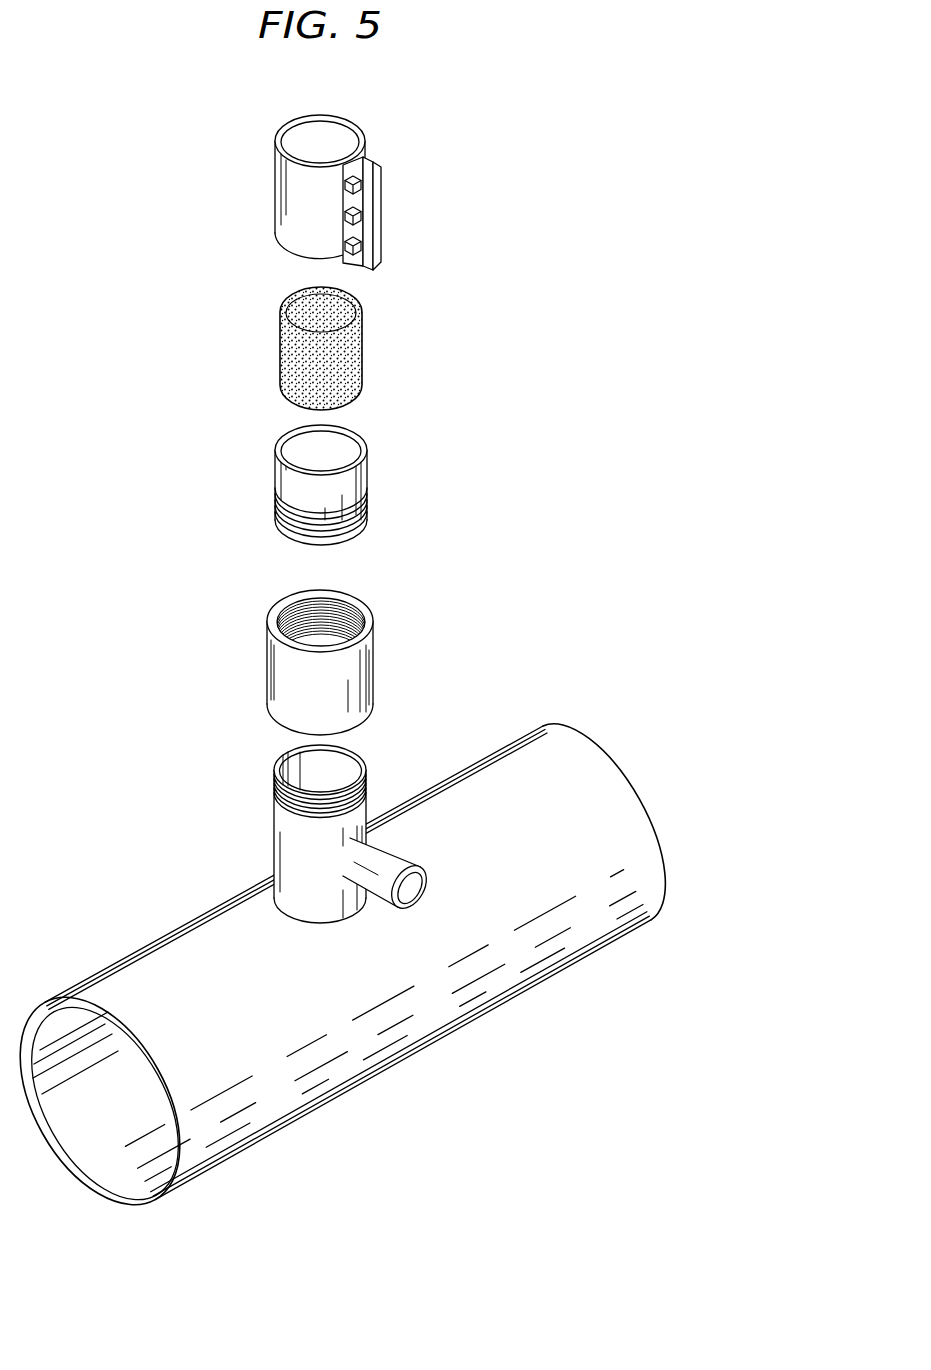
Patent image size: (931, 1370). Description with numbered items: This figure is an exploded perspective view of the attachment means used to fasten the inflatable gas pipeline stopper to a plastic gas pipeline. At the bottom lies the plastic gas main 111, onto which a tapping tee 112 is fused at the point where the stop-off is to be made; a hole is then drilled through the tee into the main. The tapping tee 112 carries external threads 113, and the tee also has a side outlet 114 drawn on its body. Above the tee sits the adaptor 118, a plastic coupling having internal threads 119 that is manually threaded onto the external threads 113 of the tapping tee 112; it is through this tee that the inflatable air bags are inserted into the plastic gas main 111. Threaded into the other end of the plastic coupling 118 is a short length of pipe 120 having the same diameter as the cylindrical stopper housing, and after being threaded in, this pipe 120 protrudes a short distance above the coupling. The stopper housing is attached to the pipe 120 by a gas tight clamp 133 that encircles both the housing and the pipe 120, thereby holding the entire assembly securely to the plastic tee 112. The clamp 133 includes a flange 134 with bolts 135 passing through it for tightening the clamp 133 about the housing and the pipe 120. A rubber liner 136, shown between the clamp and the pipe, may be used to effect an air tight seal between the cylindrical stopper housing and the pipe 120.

The plastic gas main 111 is at (553, 930).
The tapping tee 112 is at (340, 825).
The external threads 113 is at (368, 790).
The side outlet of tee 114 is at (388, 857).
The adaptor 118 is at (309, 650).
The internal threads 119 is at (343, 612).
The pipe 120 is at (284, 486).
The clamp 133 is at (323, 204).
The flange 134 is at (378, 160).
The bolts 135 is at (344, 250).
The rubber liner 136 is at (282, 356).